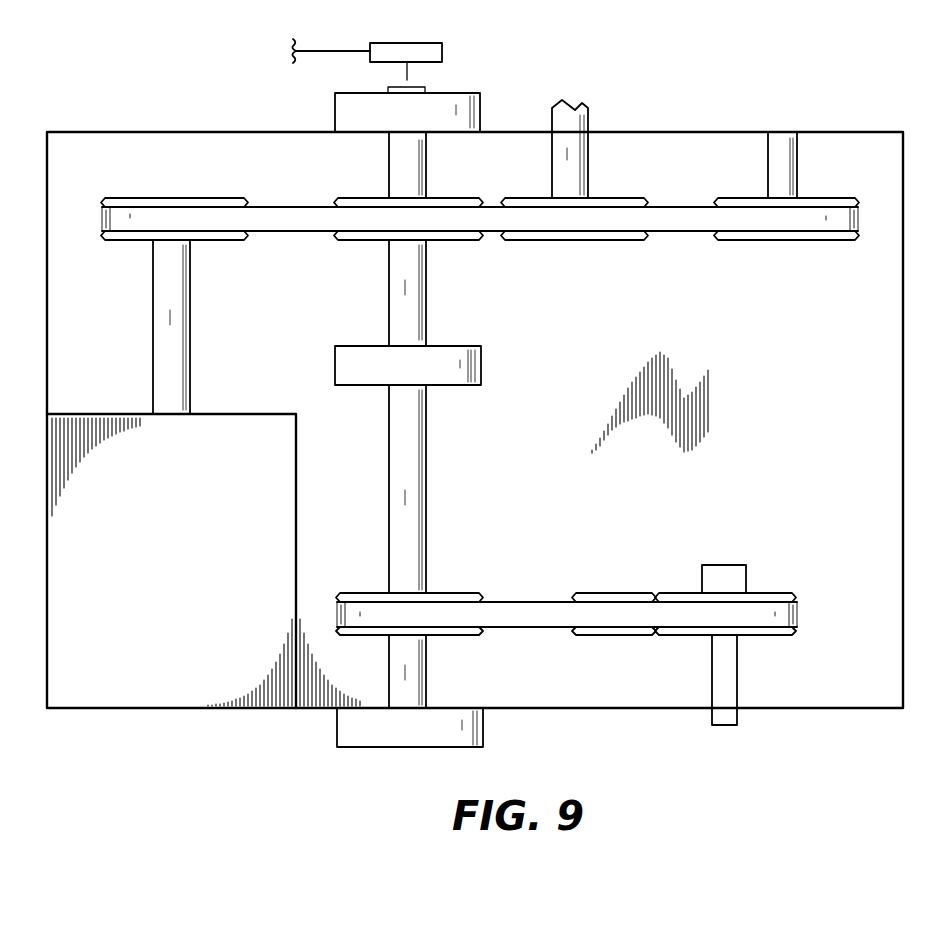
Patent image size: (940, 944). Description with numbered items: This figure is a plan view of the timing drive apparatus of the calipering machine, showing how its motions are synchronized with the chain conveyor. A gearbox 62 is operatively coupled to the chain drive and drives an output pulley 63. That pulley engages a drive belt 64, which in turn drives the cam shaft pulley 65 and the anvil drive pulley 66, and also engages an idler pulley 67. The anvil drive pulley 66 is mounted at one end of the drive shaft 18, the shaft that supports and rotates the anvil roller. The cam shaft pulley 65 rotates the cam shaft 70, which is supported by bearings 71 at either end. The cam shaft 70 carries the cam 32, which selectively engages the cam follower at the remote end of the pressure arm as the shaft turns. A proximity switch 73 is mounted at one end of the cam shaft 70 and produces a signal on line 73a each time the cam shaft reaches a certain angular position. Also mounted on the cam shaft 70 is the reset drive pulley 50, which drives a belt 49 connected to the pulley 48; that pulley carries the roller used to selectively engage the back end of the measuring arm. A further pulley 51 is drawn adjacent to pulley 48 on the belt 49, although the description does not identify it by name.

The drive shaft 18 is at (552, 120).
The cam 32 is at (453, 385).
The pulley 48 is at (768, 636).
The belt 49 is at (523, 602).
The reset drive pulley 50 is at (360, 593).
The pulley 51 is at (615, 636).
The gearbox 62 is at (193, 581).
The output pulley 63 is at (130, 243).
The drive belt 64 is at (288, 207).
The cam shaft pulley 65 is at (357, 241).
The anvil drive pulley 66 is at (573, 241).
The idler pulley 67 is at (790, 241).
The cam shaft 70 is at (389, 300).
The bearings 71 is at (335, 116).
The proximity switch 73 is at (418, 43).
The line 73a is at (330, 51).